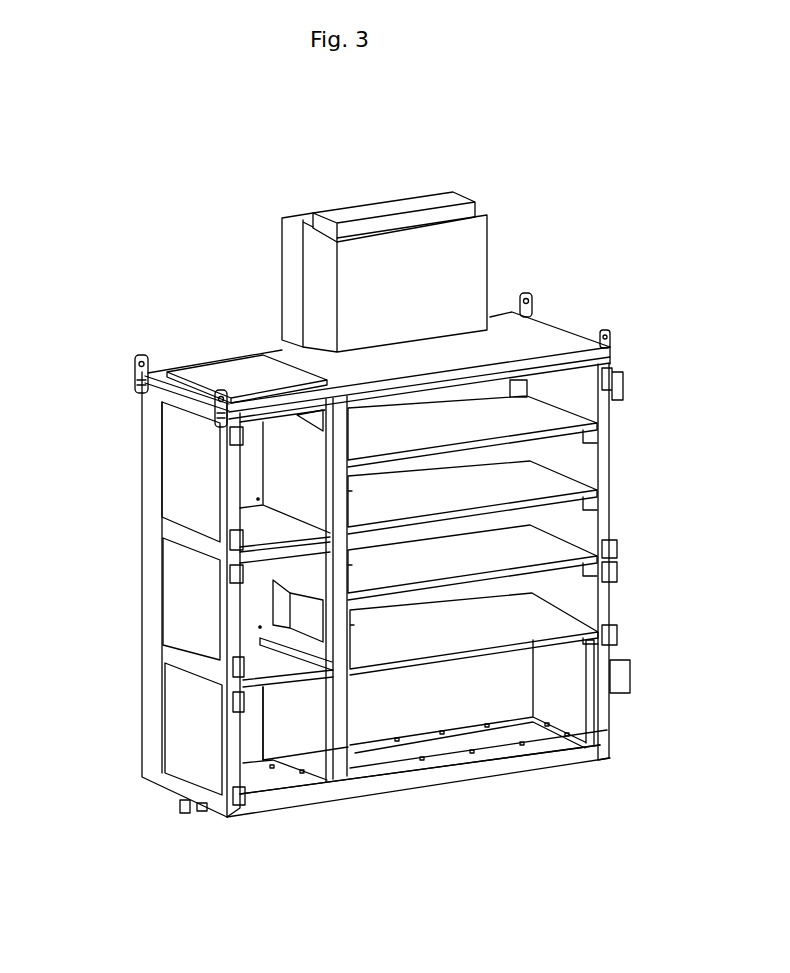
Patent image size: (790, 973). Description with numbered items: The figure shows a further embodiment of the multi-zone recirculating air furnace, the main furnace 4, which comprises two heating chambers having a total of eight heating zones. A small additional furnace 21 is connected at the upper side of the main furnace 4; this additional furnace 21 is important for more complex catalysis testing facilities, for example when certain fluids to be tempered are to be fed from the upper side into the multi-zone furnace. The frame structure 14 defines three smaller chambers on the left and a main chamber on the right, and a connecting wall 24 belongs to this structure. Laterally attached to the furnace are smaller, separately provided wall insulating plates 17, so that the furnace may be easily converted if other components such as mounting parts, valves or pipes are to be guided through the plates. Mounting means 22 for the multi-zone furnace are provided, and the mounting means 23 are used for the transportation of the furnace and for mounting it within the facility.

The main furnace 4 is at (168, 298).
The additional furnace 21 is at (462, 208).
The mounting means for multi-zone furnace 22 is at (532, 305).
The mounting means 23 is at (630, 386).
The wall insulating plate 17 is at (197, 730).
The frame structure 14 is at (295, 803).
The connecting wall 24 is at (305, 728).